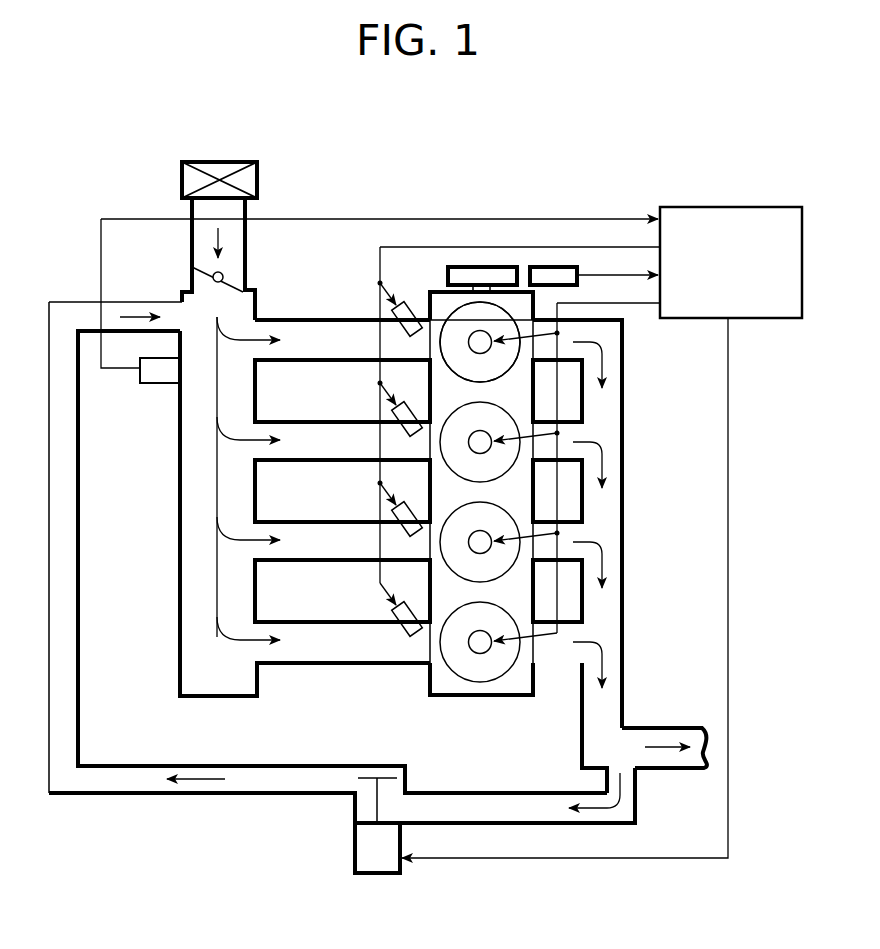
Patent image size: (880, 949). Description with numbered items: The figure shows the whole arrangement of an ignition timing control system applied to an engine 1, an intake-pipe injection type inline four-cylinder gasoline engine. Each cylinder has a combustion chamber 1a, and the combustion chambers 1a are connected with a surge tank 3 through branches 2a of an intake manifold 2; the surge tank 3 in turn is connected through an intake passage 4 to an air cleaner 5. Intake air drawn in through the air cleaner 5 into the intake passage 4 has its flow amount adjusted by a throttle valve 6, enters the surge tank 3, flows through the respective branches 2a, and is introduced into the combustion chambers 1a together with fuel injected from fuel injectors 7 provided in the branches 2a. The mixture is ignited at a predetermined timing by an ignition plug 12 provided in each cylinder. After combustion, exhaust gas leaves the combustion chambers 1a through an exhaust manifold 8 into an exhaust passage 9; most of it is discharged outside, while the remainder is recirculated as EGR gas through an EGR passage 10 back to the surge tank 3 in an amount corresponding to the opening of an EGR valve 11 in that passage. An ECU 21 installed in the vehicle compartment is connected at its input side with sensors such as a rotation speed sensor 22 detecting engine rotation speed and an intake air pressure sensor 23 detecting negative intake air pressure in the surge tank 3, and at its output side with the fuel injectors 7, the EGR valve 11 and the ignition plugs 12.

The engine 1 is at (428, 212).
The combustion chamber 1a is at (463, 322).
The intake manifold 2 is at (297, 315).
The branch 2a is at (342, 335).
The surge tank 3 is at (192, 502).
The intake passage 4 is at (247, 245).
The air cleaner 5 is at (248, 173).
The throttle valve 6 is at (203, 265).
The fuel injector 7 is at (410, 303).
The exhaust manifold 8 is at (612, 513).
The exhaust passage 9 is at (662, 737).
The EGR passage 10 is at (302, 773).
The EGR valve 11 is at (358, 842).
The ignition plug 12 is at (482, 336).
The ECU 21 is at (782, 207).
The rotation speed sensor 22 is at (548, 272).
The intake air pressure sensor 23 is at (152, 383).